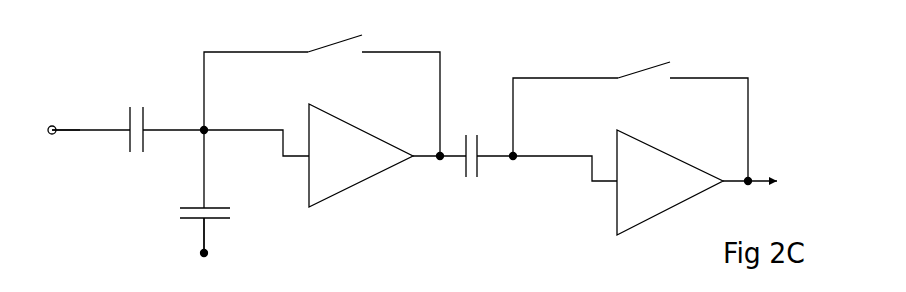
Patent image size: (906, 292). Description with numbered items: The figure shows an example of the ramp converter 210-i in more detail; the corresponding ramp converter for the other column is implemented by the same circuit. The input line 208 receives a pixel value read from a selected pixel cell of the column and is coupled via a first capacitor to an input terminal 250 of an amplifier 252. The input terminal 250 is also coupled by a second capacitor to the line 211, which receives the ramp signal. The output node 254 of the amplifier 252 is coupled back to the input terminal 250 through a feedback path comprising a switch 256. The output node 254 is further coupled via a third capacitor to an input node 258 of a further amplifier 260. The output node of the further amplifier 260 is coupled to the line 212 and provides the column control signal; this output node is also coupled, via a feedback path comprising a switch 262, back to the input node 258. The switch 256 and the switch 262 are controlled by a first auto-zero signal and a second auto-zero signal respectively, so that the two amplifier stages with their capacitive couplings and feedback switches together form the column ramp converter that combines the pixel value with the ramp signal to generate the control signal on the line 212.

The input line 208 is at (98, 133).
The input terminal 250 is at (204, 129).
The line receiving the ramp signal 211 is at (204, 237).
The switch 256 is at (344, 49).
The amplifier 252 is at (360, 142).
The output node 254 is at (437, 162).
The input node 258 is at (514, 162).
The switch 262 is at (648, 75).
The further amplifier 260 is at (657, 162).
The line 212 is at (763, 180).
The ramp converter 210-i is at (714, 43).